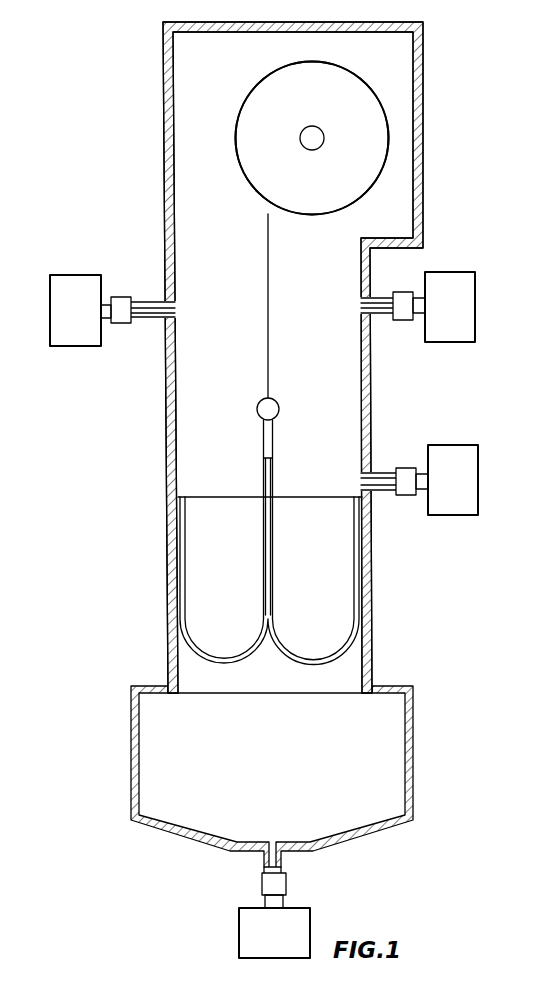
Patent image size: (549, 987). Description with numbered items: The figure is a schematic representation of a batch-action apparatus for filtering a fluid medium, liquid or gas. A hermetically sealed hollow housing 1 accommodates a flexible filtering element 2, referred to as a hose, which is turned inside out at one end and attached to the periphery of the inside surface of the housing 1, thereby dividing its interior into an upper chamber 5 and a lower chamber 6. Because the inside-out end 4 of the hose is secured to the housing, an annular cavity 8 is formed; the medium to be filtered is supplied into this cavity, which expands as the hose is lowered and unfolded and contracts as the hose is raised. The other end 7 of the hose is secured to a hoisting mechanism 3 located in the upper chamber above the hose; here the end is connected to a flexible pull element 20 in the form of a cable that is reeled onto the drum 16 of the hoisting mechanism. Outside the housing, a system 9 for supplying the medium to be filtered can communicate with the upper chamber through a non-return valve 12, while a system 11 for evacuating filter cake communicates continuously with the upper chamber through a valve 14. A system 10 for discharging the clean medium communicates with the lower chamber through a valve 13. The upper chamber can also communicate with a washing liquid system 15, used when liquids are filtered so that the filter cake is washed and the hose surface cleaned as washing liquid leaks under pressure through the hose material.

The housing 1 is at (162, 58).
The filtering element 2 is at (361, 648).
The hoisting mechanism 3 is at (397, 122).
The end of the hose turned inside out 4 is at (177, 505).
The upper chamber 5 is at (397, 227).
The lower chamber 6 is at (390, 720).
The other end of the hose 7 is at (272, 477).
The annular cavity 8 is at (345, 582).
The system for supplying the medium to be filtered 9 is at (65, 282).
The system for discharging the clean medium 10 is at (248, 927).
The system for evacuating filter cake 11 is at (460, 505).
The non-return valve 12 is at (119, 299).
The valve 13 is at (262, 885).
The valve 14 is at (407, 492).
The washing liquid system 15 is at (457, 330).
The drum 16 is at (353, 85).
The flexible pull element 20 is at (267, 256).